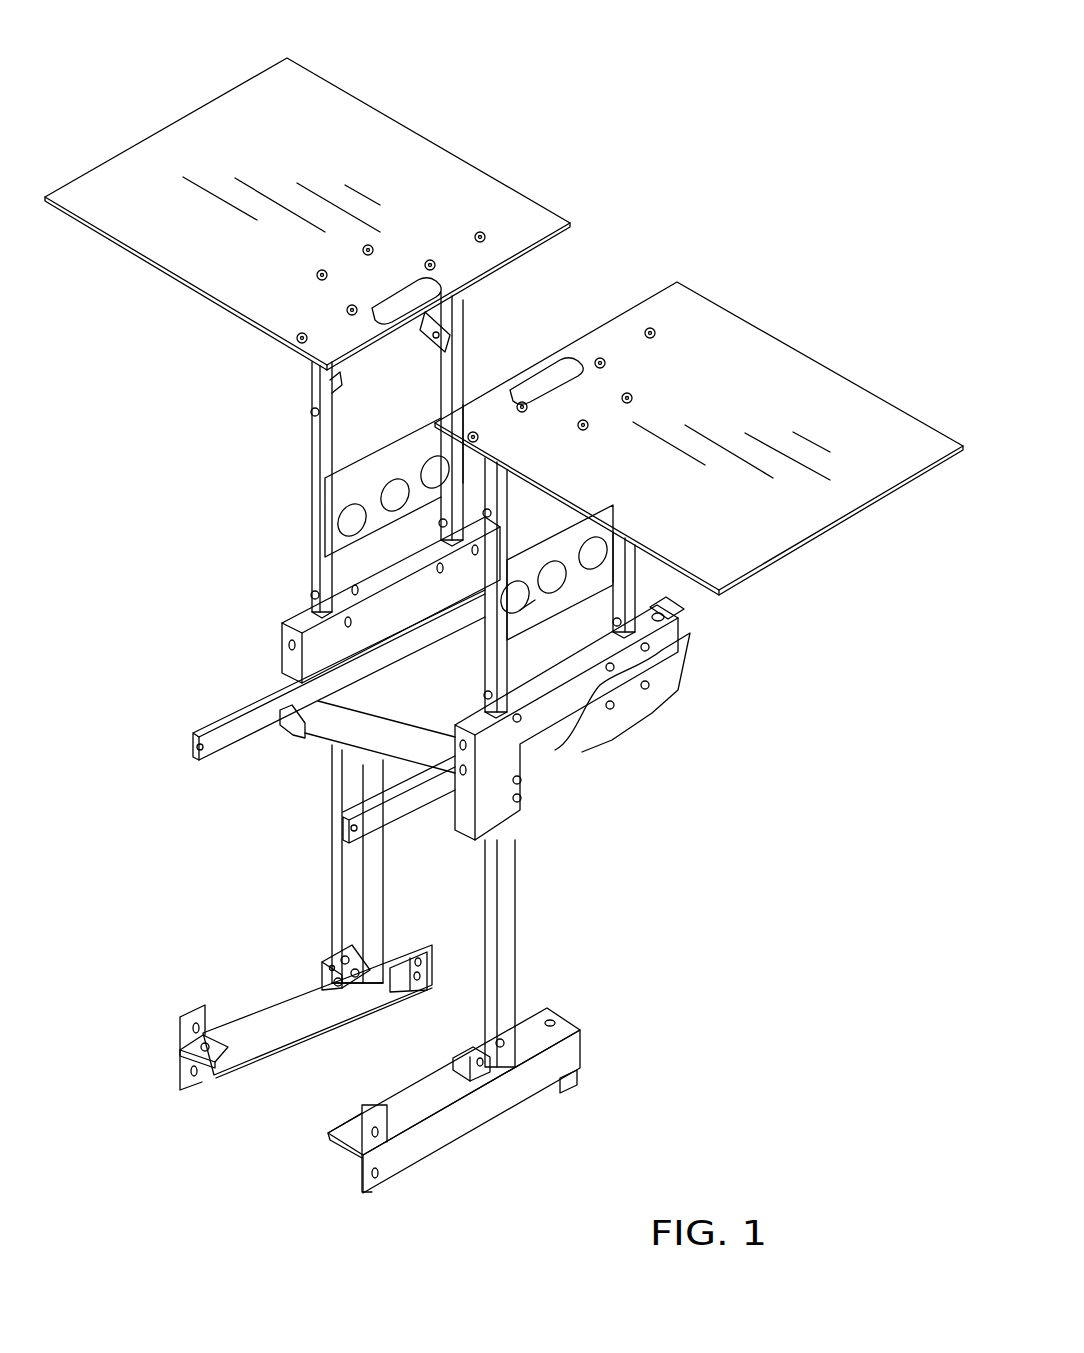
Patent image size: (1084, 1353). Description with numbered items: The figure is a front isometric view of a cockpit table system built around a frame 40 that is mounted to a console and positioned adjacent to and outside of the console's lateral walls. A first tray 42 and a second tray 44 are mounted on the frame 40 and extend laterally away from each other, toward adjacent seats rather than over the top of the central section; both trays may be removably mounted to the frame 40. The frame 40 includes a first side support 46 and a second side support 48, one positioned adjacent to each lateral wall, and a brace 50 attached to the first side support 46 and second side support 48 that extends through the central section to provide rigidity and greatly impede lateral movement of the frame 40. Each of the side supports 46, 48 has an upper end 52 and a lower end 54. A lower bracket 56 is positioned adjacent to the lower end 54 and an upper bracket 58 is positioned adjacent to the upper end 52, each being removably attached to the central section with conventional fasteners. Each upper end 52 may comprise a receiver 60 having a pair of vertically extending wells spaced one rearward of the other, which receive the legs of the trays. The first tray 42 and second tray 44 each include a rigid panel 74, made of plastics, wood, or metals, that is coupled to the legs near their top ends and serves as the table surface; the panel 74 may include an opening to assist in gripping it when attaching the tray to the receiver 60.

The frame 40 is at (258, 912).
The first tray 42 is at (258, 357).
The second tray 44 is at (703, 603).
The first side support 46 is at (330, 800).
The second side support 48 is at (517, 855).
The brace 50 is at (335, 720).
The upper end 52 is at (300, 612).
The lower end 54 is at (203, 1090).
The lower bracket 56 is at (425, 1005).
The upper bracket 58 is at (270, 705).
The receiver 60 is at (677, 628).
The panel 74 is at (443, 180).